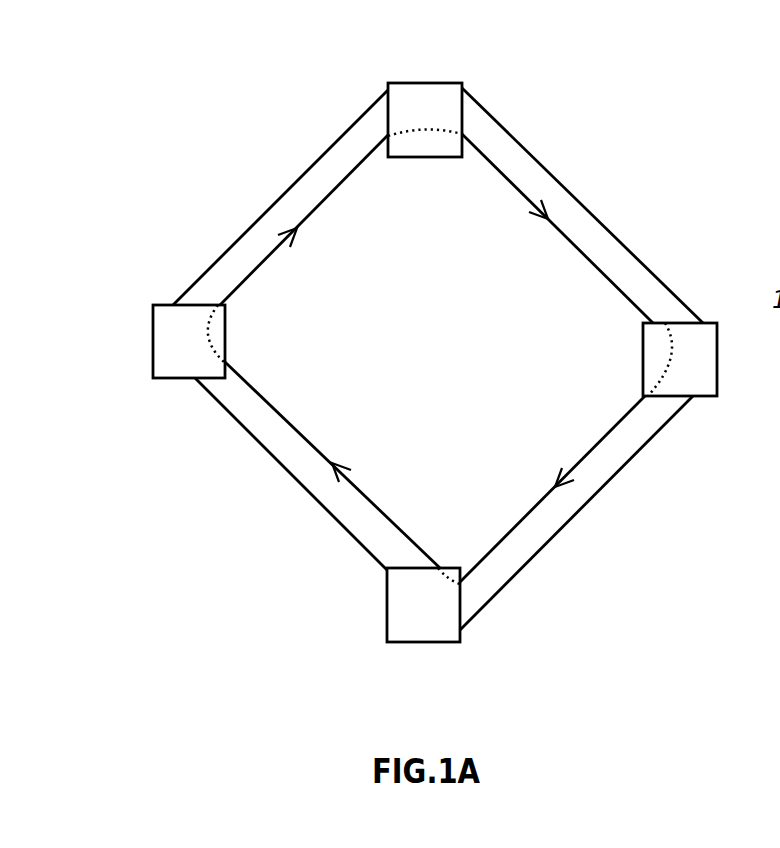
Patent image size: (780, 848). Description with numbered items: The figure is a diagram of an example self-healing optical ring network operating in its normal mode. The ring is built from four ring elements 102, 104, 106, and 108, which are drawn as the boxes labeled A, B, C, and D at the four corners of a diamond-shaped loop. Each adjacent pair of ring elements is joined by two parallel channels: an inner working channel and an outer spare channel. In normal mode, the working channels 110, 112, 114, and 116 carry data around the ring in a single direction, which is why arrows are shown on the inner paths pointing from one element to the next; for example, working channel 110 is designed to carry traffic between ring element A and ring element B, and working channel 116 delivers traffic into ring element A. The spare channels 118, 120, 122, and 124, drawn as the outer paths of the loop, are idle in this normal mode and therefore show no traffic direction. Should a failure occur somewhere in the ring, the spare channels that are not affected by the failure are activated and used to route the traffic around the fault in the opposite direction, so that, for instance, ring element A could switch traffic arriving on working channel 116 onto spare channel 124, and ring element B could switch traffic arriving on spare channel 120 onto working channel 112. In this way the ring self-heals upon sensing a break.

The ring element 102 is at (420, 82).
The ring element 104 is at (717, 387).
The ring element 106 is at (428, 643).
The ring element 108 is at (153, 330).
The working channel 110 is at (570, 241).
The working channel 112 is at (595, 447).
The working channel 114 is at (303, 437).
The working channel 116 is at (323, 201).
The spare channel 118 is at (604, 226).
The spare channel 120 is at (623, 466).
The spare channel 122 is at (270, 454).
The spare channel 124 is at (300, 178).